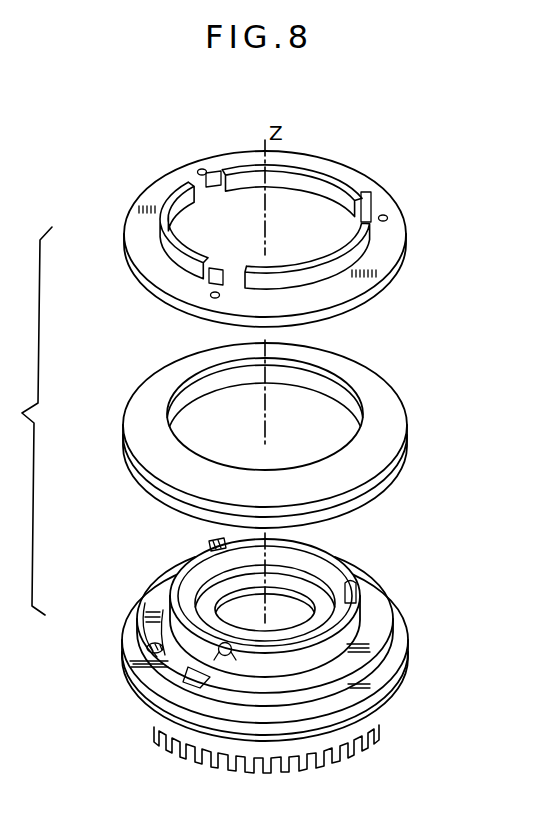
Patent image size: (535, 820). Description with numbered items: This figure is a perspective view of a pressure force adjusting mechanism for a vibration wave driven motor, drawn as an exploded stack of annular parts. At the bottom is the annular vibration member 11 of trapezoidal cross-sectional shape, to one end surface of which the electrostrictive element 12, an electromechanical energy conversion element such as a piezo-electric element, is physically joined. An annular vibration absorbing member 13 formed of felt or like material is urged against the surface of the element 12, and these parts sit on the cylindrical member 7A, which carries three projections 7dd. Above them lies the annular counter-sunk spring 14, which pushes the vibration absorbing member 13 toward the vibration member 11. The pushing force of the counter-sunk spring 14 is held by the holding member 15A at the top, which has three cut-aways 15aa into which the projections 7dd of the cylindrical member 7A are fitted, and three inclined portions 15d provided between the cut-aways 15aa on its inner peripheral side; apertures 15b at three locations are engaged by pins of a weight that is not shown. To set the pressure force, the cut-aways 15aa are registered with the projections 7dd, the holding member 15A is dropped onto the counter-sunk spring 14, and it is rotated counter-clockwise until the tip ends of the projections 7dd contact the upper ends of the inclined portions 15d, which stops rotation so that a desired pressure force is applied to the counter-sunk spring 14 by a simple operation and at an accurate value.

The holding member 15A is at (366, 180).
The inclined portions 15d is at (317, 178).
The cut-aways 15aa is at (214, 176).
The apertures 15b is at (199, 170).
The counter-sunk spring 14 is at (387, 421).
The cylindrical member 7A is at (160, 602).
The projections 7dd is at (216, 542).
The vibration absorbing member 13 is at (373, 624).
The electrostrictive element 12 is at (397, 674).
The vibration member 11 is at (373, 721).